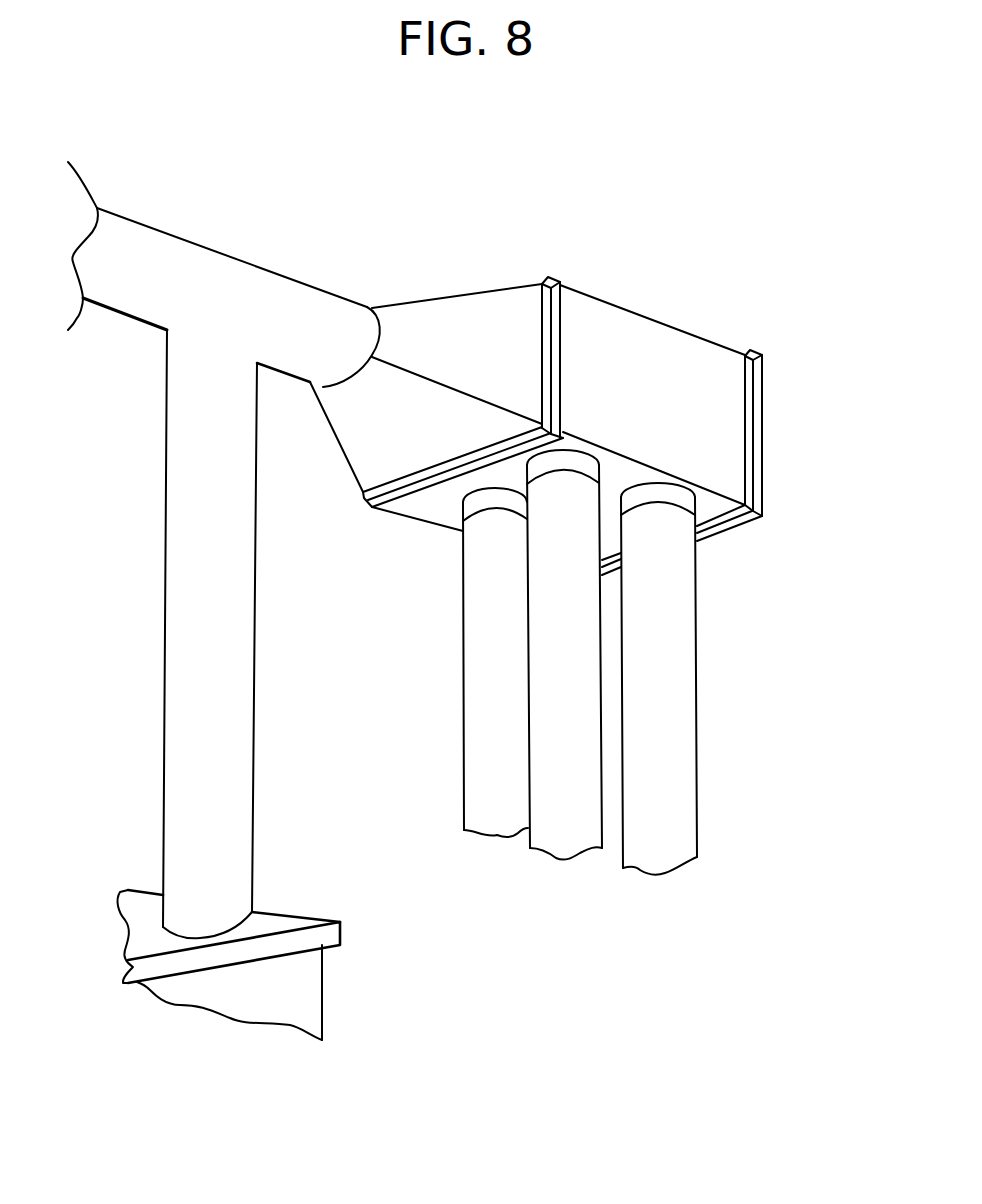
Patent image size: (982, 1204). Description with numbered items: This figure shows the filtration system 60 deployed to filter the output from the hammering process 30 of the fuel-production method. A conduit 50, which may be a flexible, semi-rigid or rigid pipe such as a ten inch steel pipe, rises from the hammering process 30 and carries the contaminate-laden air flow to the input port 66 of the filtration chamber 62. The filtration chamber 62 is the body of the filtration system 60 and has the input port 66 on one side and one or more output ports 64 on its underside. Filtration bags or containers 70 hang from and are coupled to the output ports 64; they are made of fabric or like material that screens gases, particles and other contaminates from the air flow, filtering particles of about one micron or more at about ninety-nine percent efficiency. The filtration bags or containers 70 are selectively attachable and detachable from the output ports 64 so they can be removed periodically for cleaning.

The hammering process 30 is at (270, 920).
The conduit 50 is at (303, 305).
The filtration system 60 is at (605, 420).
The filtration chamber 62 is at (722, 408).
The output ports 64 is at (583, 467).
The input port 66 is at (453, 320).
The filtration bags or containers 70 is at (497, 673).